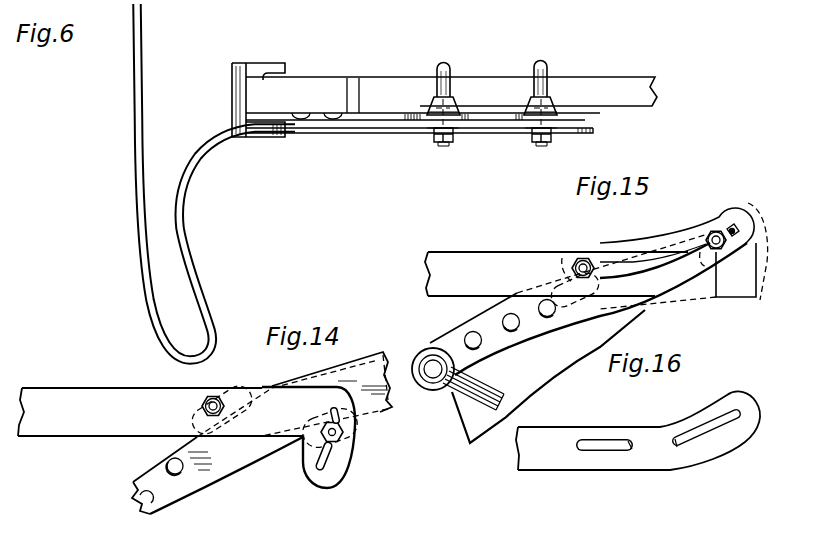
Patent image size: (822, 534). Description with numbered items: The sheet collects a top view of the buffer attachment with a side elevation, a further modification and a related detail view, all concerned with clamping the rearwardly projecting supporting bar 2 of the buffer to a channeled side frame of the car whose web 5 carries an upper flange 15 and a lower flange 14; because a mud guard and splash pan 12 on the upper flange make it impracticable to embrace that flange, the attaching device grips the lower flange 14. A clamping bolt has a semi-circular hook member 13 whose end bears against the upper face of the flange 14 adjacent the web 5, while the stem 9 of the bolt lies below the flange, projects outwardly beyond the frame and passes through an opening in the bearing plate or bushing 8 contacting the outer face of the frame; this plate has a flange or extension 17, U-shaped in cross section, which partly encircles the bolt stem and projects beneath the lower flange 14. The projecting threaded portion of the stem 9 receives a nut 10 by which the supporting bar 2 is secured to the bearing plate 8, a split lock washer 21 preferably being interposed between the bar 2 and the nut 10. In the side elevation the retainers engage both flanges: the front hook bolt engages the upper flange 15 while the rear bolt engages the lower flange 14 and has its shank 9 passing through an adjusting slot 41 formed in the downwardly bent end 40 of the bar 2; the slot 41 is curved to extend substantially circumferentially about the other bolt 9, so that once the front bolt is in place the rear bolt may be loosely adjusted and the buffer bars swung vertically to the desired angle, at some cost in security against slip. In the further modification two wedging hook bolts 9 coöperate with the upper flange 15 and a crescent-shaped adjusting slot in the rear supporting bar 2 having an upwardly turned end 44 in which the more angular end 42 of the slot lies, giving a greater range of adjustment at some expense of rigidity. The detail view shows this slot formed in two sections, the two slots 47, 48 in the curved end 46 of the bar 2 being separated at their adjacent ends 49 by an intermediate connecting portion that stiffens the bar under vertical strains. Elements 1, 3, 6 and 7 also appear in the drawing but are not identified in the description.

In FIG. 6, the tubular hoop handle 1 is at (133, 113).
In FIG. 6, the supporting bar 2 is at (394, 124).
In FIG. 14, the supporting bar 2 is at (48, 428).
In FIG. 15, the supporting bar 2 is at (463, 258).
In FIG. 16, the supporting bar 2 is at (552, 433).
In FIG. 6, the lower strip 3 is at (594, 126).
In FIG. 14, the web 5 is at (380, 412).
In FIG. 15, the web 5 is at (562, 322).
In FIG. 6, the clamp block 6 is at (232, 92).
In FIG. 15, the eye ring 7 is at (491, 393).
In FIG. 6, the bearing plate 8 is at (455, 113).
In FIG. 14, the bearing plate 8 is at (213, 436).
In FIG. 15, the bearing plate 8 is at (576, 289).
In FIG. 6, the bolt stem 9 is at (443, 144).
In FIG. 14, the bolt stem 9 is at (203, 404).
In FIG. 15, the bolt stem 9 is at (588, 260).
In FIG. 6, the nut 10 is at (433, 133).
In FIG. 14, the nut 10 is at (219, 397).
In FIG. 15, the nut 10 is at (703, 236).
In FIG. 15, the splash pan 12 is at (548, 376).
In FIG. 6, the hook member 13 is at (447, 64).
In FIG. 6, the lower flange 14 is at (548, 63).
In FIG. 14, the lower flange 14 is at (383, 421).
In FIG. 15, the lower flange 14 is at (681, 285).
In FIG. 6, the upper flange 15 is at (638, 77).
In FIG. 14, the upper flange 15 is at (385, 354).
In FIG. 15, the upper flange 15 is at (758, 248).
In FIG. 6, the flange or extension 17 is at (527, 102).
In FIG. 6, the split lock washer 21 is at (432, 128).
In FIG. 14, the downwardly bent end 40 is at (339, 480).
In FIG. 14, the adjusting slot 41 is at (317, 461).
In FIG. 15, the more angular end of the slot 42 is at (734, 226).
In FIG. 15, the upwardly turned end 44 is at (716, 230).
In FIG. 15, the curved end 46 is at (570, 265).
In FIG. 16, the curved end 46 is at (741, 402).
In FIG. 16, the slot 47 is at (601, 451).
In FIG. 16, the slot 48 is at (711, 438).
In FIG. 16, the adjacent ends 49 is at (677, 448).